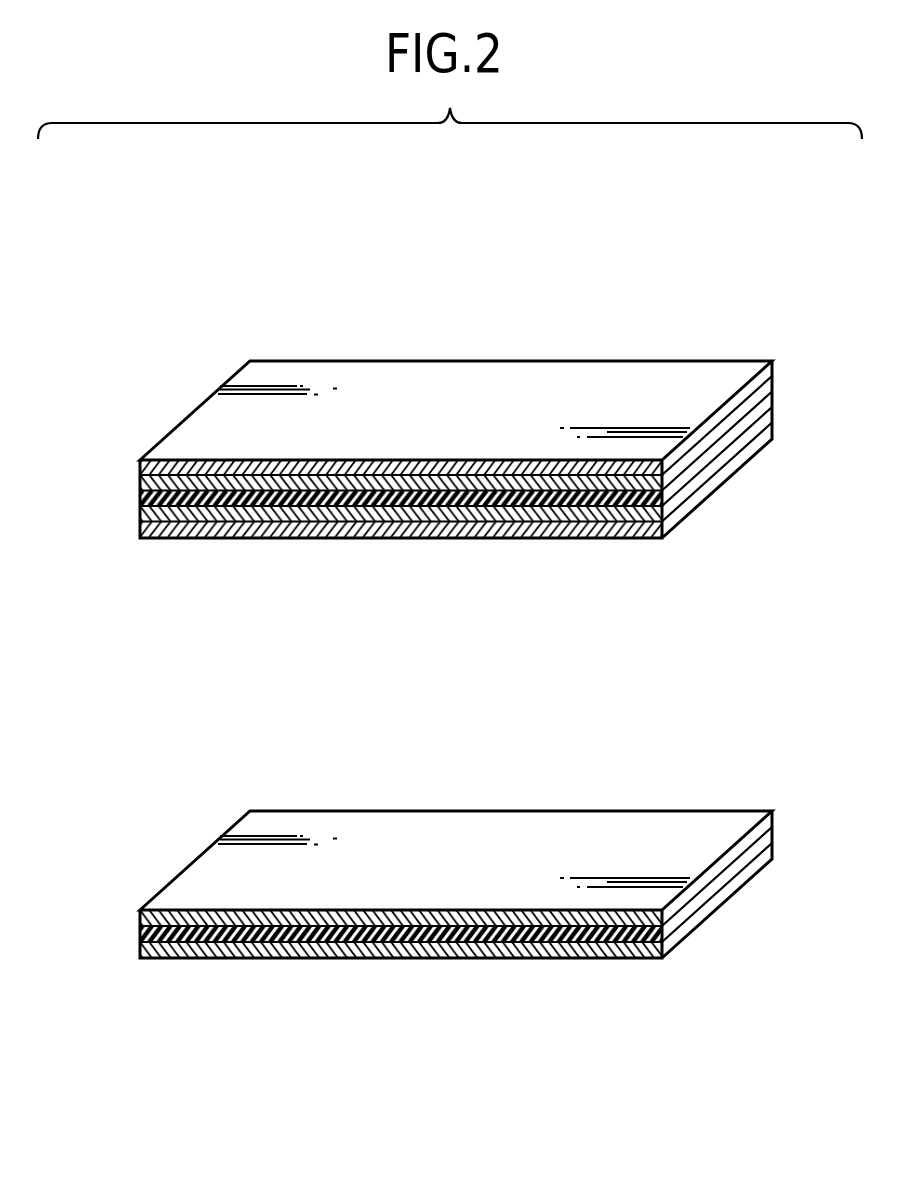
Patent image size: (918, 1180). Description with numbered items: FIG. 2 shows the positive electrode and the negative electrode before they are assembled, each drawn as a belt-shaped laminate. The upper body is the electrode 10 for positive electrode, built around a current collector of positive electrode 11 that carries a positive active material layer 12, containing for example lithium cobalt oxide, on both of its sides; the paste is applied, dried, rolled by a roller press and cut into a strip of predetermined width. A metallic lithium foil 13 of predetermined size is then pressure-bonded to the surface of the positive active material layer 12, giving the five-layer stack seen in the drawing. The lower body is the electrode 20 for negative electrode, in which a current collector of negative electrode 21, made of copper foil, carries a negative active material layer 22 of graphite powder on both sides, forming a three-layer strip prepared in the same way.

The electrode for positive electrode 10 is at (532, 370).
The current collector of positive electrode 11 is at (515, 495).
The positive active material layer 12 is at (463, 491).
The metallic lithium foil 13 is at (414, 476).
The electrode for negative electrode 20 is at (533, 823).
The current collector of negative electrode 21 is at (572, 936).
The negative active material layer 22 is at (520, 927).